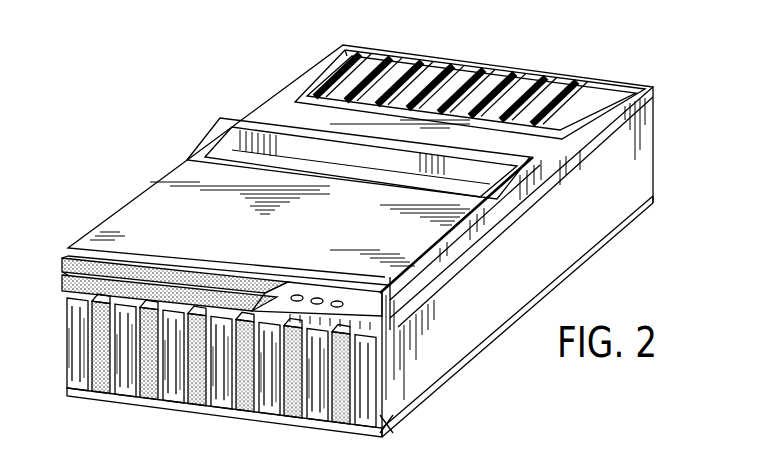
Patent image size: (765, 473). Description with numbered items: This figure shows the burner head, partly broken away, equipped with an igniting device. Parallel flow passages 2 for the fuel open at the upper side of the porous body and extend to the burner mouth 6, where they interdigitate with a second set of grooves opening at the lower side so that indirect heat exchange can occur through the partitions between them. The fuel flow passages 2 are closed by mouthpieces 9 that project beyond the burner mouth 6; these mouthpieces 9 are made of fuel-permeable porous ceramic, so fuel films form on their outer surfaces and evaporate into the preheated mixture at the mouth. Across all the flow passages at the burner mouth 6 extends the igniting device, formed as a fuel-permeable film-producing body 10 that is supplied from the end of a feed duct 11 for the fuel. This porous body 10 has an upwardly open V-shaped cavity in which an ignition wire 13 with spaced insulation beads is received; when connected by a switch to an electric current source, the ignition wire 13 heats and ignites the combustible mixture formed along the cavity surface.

The flow passages 2 is at (367, 50).
The burner mouth 6 is at (393, 420).
The mouthpieces 9 is at (97, 335).
The fuel-permeable film-producing body 10 is at (199, 300).
The feed duct 11 is at (277, 163).
The ignition wire 13 is at (366, 297).